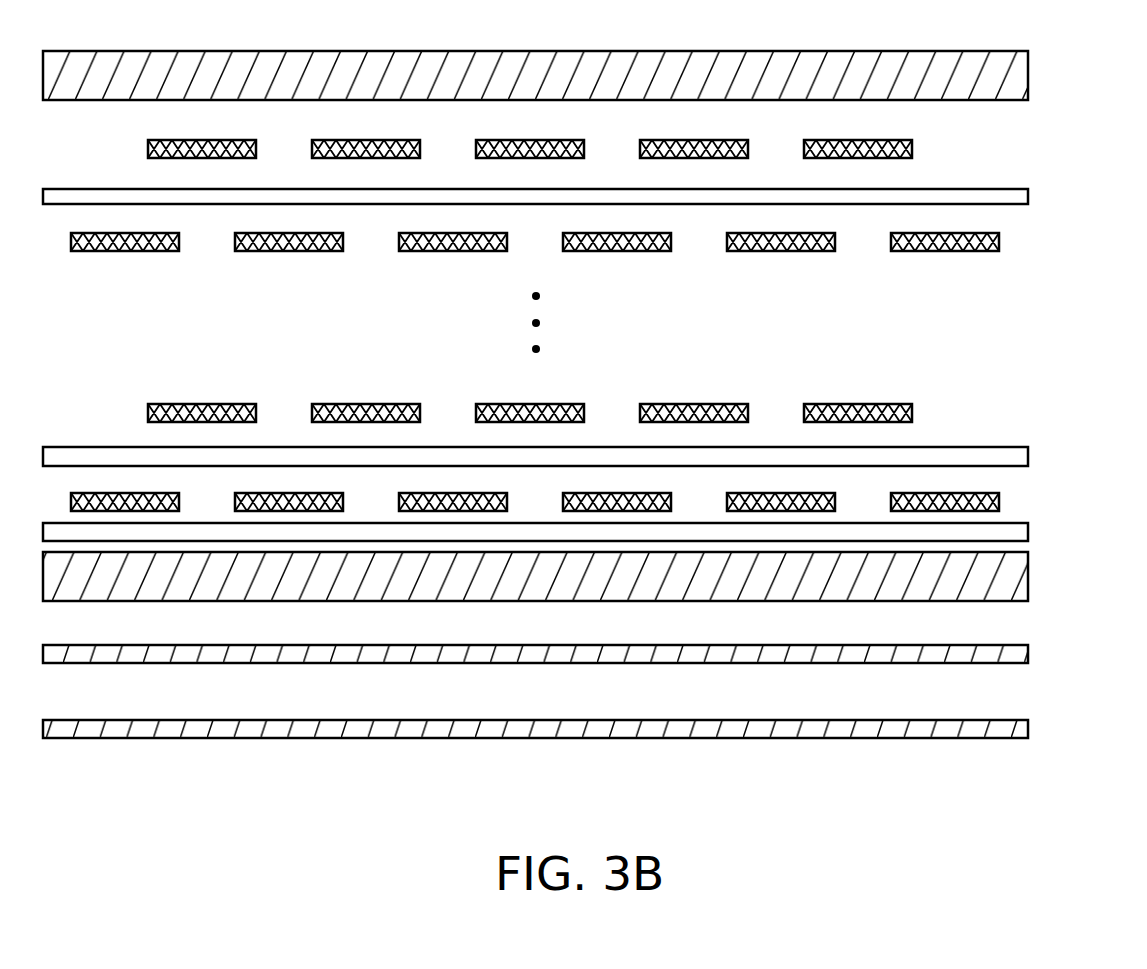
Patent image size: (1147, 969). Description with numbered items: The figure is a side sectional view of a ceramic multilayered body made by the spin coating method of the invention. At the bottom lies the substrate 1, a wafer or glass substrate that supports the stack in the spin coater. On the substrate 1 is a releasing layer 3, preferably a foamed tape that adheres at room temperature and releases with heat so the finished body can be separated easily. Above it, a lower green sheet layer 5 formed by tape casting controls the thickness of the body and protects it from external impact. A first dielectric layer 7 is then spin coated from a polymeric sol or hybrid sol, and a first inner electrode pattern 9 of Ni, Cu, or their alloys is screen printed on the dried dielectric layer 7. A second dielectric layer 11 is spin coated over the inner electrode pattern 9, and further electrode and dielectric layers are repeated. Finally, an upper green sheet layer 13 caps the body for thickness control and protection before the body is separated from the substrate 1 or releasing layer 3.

The substrate 1 is at (1028, 727).
The releasing layer 3 is at (1028, 650).
The lower green sheet layer 5 is at (1028, 578).
The first dielectric layer 7 is at (1028, 531).
The first inner electrode pattern 9 is at (999, 498).
The second dielectric layer 11 is at (1028, 456).
The upper green sheet layer 13 is at (1028, 73).